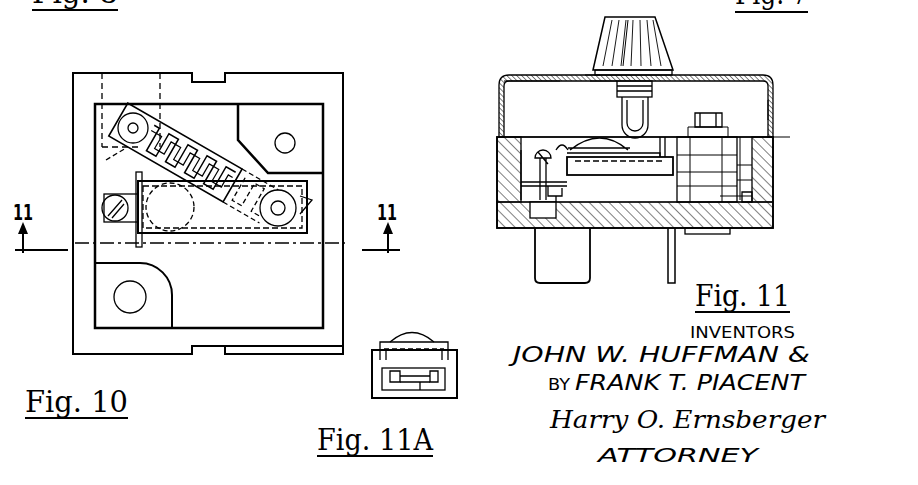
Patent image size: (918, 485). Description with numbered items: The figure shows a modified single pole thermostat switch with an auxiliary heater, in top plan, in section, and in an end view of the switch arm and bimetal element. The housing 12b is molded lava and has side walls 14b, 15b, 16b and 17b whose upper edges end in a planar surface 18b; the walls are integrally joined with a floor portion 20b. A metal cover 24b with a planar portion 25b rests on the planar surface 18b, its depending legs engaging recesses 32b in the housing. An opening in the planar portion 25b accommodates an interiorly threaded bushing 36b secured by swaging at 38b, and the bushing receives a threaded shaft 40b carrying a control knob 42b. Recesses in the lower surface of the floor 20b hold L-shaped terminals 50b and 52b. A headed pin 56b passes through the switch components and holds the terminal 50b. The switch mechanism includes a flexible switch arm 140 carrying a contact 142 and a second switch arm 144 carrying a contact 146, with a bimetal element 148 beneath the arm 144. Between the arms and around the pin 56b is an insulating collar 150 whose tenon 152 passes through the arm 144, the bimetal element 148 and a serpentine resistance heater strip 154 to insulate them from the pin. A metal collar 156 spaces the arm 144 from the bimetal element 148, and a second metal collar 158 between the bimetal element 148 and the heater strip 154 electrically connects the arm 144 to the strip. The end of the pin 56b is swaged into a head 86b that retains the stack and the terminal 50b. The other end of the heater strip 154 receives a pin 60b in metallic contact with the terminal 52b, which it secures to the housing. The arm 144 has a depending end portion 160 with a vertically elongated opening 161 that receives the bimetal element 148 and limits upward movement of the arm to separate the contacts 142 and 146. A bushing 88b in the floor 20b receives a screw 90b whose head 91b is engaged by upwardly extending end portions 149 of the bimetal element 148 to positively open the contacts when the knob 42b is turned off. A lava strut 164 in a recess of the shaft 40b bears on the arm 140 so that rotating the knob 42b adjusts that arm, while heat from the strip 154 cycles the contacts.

In FIG. 10, the housing 12b is at (349, 70).
In FIG. 11, the housing 12b is at (786, 151).
In FIG. 10, the side wall 14b is at (240, 75).
In FIG. 10, the side wall 15b is at (219, 356).
In FIG. 10, the side wall 16b is at (344, 104).
In FIG. 10, the side wall 17b is at (74, 141).
In FIG. 11, the planar surface 18b is at (771, 137).
In FIG. 11, the floor portion 20b is at (586, 216).
In FIG. 11, the cover 24b is at (500, 72).
In FIG. 11, the planar portion 25b is at (545, 78).
In FIG. 10, the recesses 32b is at (213, 58).
In FIG. 11, the bushing 36b is at (622, 76).
In FIG. 11, the swaging 38b is at (593, 74).
In FIG. 11, the threaded shaft 40b is at (612, 87).
In FIG. 11, the control knob 42b is at (600, 46).
In FIG. 10, the terminal 50b is at (246, 240).
In FIG. 11, the terminal 50b is at (669, 284).
In FIG. 10, the terminal 52b is at (103, 150).
In FIG. 11, the terminal 52b is at (537, 282).
In FIG. 10, the headed shaft or pin 56b is at (286, 210).
In FIG. 11, the headed shaft or pin 56b is at (724, 142).
In FIG. 10, the pin 60b is at (130, 128).
In FIG. 11, the swaged head 86b is at (718, 236).
In FIG. 11, the bushing 88b is at (495, 220).
In FIG. 11, the screw 90b is at (536, 186).
In FIG. 11, the screw head 91b is at (508, 156).
In FIG. 11, the flexible switch arm 140 is at (668, 160).
In FIG. 10, the contact 142 is at (200, 232).
In FIG. 11, the contact 142 is at (604, 150).
In FIG. 11, the second switch arm 144 is at (690, 124).
In FIG. 11A, the second switch arm 144 is at (444, 352).
In FIG. 11, the contact 146 is at (565, 150).
In FIG. 11A, the contact 146 is at (397, 330).
In FIG. 10, the bimetal element 148 is at (150, 242).
In FIG. 11, the bimetal element 148 is at (648, 190).
In FIG. 11A, the bimetal element 148 is at (412, 368).
In FIG. 11, the end portions 149 is at (534, 168).
In FIG. 11A, the end portions 149 is at (428, 384).
In FIG. 11, the annular member or collar 150 is at (762, 116).
In FIG. 11, the tenon portion 152 is at (740, 180).
In FIG. 10, the resistance heater strip 154 is at (227, 146).
In FIG. 11, the resistance heater strip 154 is at (750, 214).
In FIG. 11, the metal collar 156 is at (740, 170).
In FIG. 11, the second metal collar 158 is at (752, 196).
In FIG. 10, the depending end portion 160 is at (131, 240).
In FIG. 11, the depending end portion 160 is at (540, 188).
In FIG. 11A, the depending end portion 160 is at (456, 378).
In FIG. 11A, the opening 161 is at (432, 388).
In FIG. 11, the lava strut or insulating pin 164 is at (628, 110).